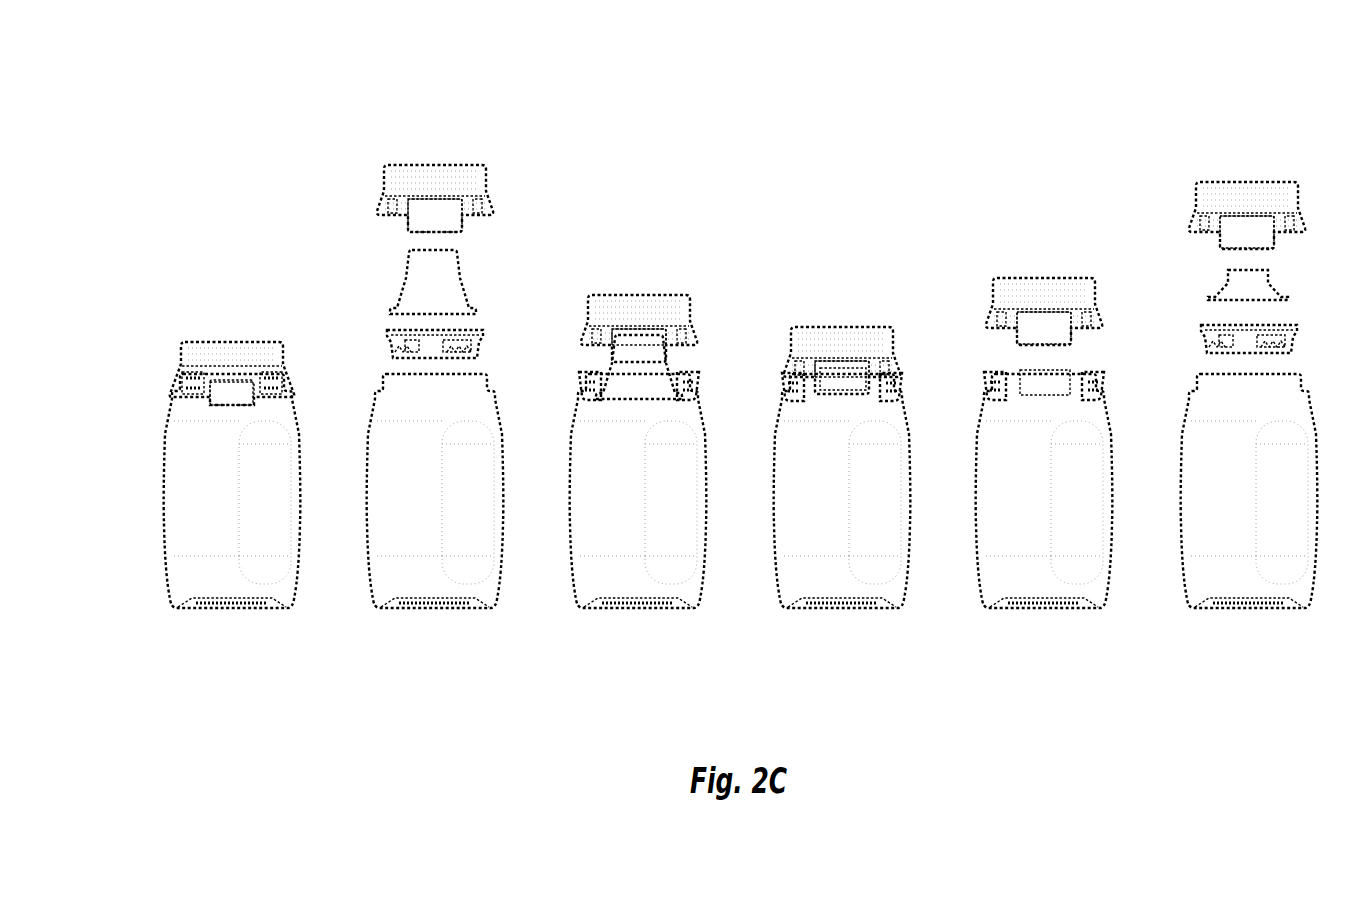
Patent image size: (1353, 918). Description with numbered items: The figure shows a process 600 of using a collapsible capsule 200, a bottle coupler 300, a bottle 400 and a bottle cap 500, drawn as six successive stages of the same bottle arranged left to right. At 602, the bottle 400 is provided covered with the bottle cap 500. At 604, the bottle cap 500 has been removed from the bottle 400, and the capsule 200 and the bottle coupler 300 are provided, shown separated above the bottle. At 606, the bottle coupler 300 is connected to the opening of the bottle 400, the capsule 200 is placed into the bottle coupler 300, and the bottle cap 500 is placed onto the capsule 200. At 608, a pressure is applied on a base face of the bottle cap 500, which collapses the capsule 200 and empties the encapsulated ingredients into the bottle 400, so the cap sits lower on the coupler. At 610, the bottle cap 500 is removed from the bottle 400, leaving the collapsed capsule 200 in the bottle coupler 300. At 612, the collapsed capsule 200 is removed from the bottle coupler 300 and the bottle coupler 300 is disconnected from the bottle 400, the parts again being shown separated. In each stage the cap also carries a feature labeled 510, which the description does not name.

The process 600 is at (177, 66).
The providing stage 602 is at (231, 518).
The cap removal and component provision stage 604 is at (435, 431).
The assembly stage 606 is at (638, 494).
The pressing stage 608 is at (841, 511).
The cap removal stage 610 is at (1043, 486).
The disassembly stage 612 is at (1250, 438).
The collapsible capsule 200 is at (418, 299).
The bottle coupler 300 is at (396, 341).
The bottle 400 is at (190, 514).
The bottle cap 500 is at (218, 364).
The cap tongue / latch 510 is at (255, 396).